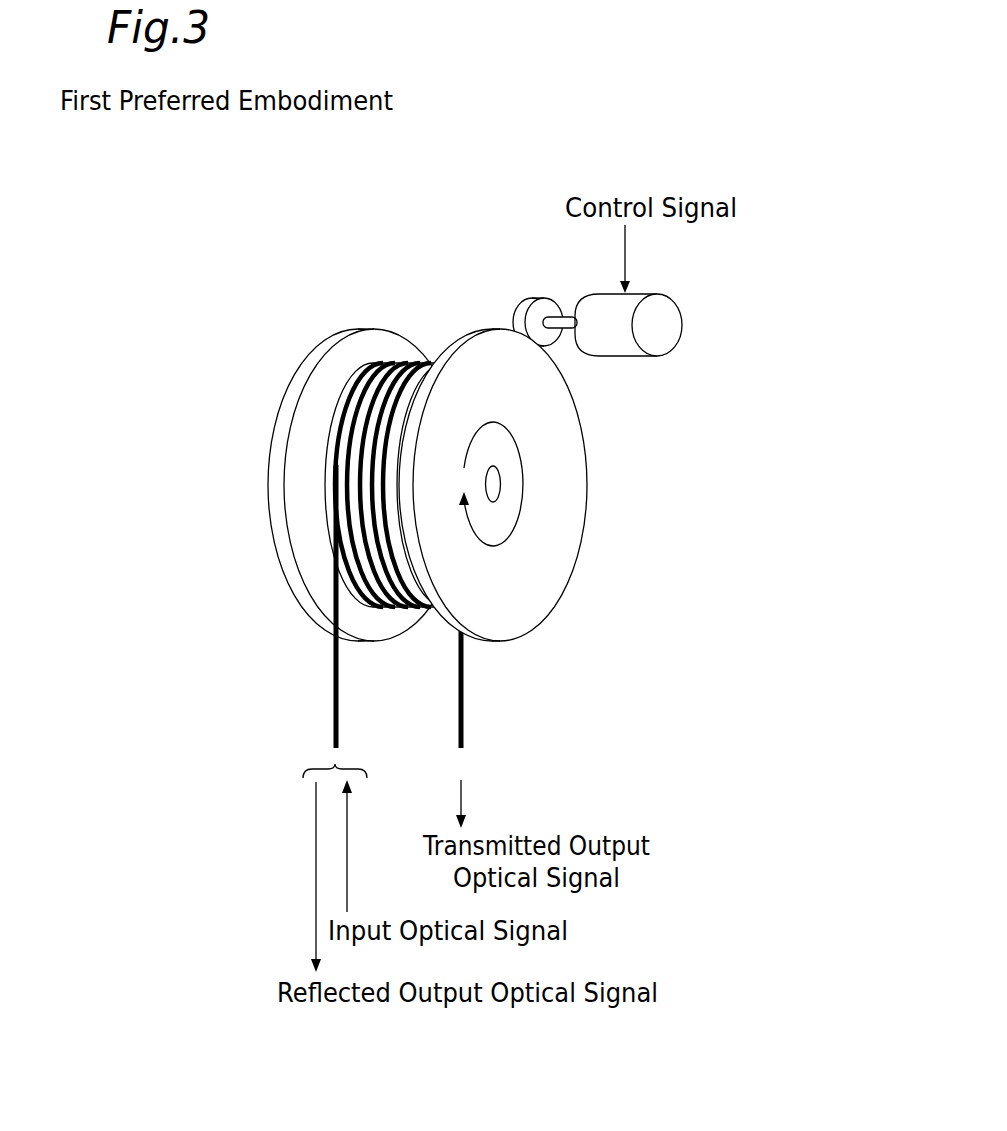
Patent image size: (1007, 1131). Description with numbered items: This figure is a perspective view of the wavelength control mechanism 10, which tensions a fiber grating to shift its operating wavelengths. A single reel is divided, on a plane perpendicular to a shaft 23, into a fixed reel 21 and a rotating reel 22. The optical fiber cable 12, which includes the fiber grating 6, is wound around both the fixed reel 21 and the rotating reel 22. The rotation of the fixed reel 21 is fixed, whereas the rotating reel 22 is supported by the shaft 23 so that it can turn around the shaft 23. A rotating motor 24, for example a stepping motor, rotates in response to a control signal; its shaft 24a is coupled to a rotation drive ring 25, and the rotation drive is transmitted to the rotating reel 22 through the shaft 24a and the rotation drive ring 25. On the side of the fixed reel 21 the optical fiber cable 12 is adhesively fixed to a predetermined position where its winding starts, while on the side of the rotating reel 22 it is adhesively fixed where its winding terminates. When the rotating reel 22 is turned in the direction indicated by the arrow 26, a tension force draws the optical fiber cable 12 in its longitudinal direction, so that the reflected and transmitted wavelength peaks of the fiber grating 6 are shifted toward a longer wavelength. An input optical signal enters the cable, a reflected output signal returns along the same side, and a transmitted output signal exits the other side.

The wavelength control mechanism 10 is at (371, 230).
The optical fiber cable 12 is at (335, 722).
The fiber grating 6 is at (191, 791).
The fixed reel 21 is at (290, 590).
The rotating reel 22 is at (578, 560).
The shaft 23 is at (496, 481).
The rotating motor 24 is at (652, 293).
The shaft of rotating motor 24a is at (573, 317).
The rotation drive ring 25 is at (540, 298).
The arrow 26 is at (523, 504).